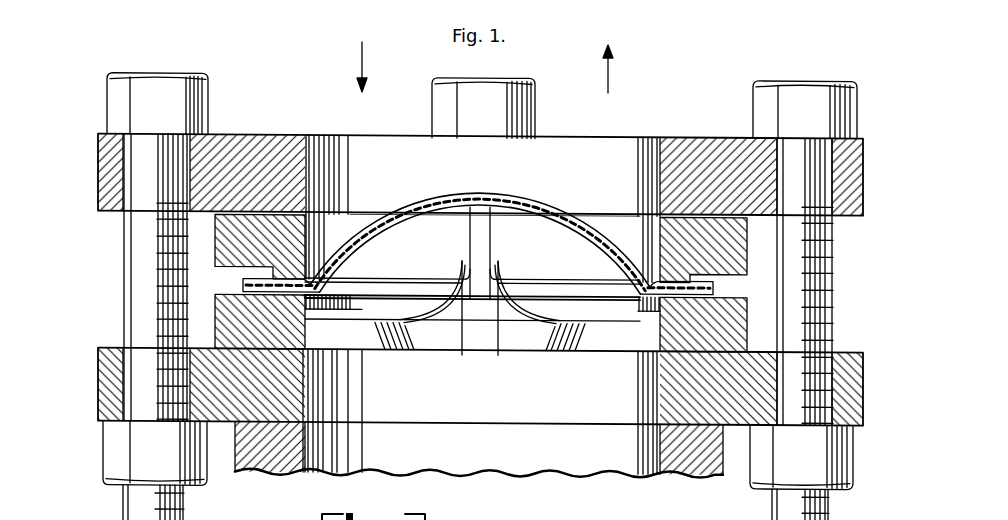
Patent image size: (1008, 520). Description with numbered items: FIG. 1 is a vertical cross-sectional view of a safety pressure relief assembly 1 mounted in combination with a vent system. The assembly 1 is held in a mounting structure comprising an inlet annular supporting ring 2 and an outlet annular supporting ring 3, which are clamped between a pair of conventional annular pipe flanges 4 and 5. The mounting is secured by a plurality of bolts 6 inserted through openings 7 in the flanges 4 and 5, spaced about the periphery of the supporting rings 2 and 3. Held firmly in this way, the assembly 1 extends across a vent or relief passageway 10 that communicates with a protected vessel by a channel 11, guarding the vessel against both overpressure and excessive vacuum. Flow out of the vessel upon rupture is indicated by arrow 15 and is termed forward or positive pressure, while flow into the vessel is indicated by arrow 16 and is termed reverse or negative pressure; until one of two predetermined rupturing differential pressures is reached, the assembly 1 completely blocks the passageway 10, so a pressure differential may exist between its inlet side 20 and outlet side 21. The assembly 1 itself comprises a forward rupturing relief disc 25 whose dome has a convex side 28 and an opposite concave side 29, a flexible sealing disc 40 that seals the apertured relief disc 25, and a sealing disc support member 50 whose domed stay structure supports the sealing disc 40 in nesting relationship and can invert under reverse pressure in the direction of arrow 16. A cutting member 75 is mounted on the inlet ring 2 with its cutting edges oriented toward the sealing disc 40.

The safety pressure relief assembly 1 is at (487, 184).
The inlet annular supporting ring 2 is at (215, 328).
The outlet annular supporting ring 3 is at (215, 246).
The annular pipe flange 4 is at (98, 379).
The annular pipe flange 5 is at (98, 160).
The bolt 6 is at (205, 88).
The opening 7 is at (195, 150).
The vent or relief passageway 10 is at (305, 330).
The channel 11 is at (658, 440).
The arrow 15 is at (608, 72).
The arrow 16 is at (362, 62).
The inlet side 20 is at (305, 372).
The outlet side 21 is at (337, 150).
The relief disc 25 is at (362, 210).
The convex side 28 is at (548, 203).
The concave side 29 is at (427, 197).
The sealing disc 40 is at (578, 225).
The sealing disc support member 50 is at (360, 237).
The cutting member 75 is at (557, 340).